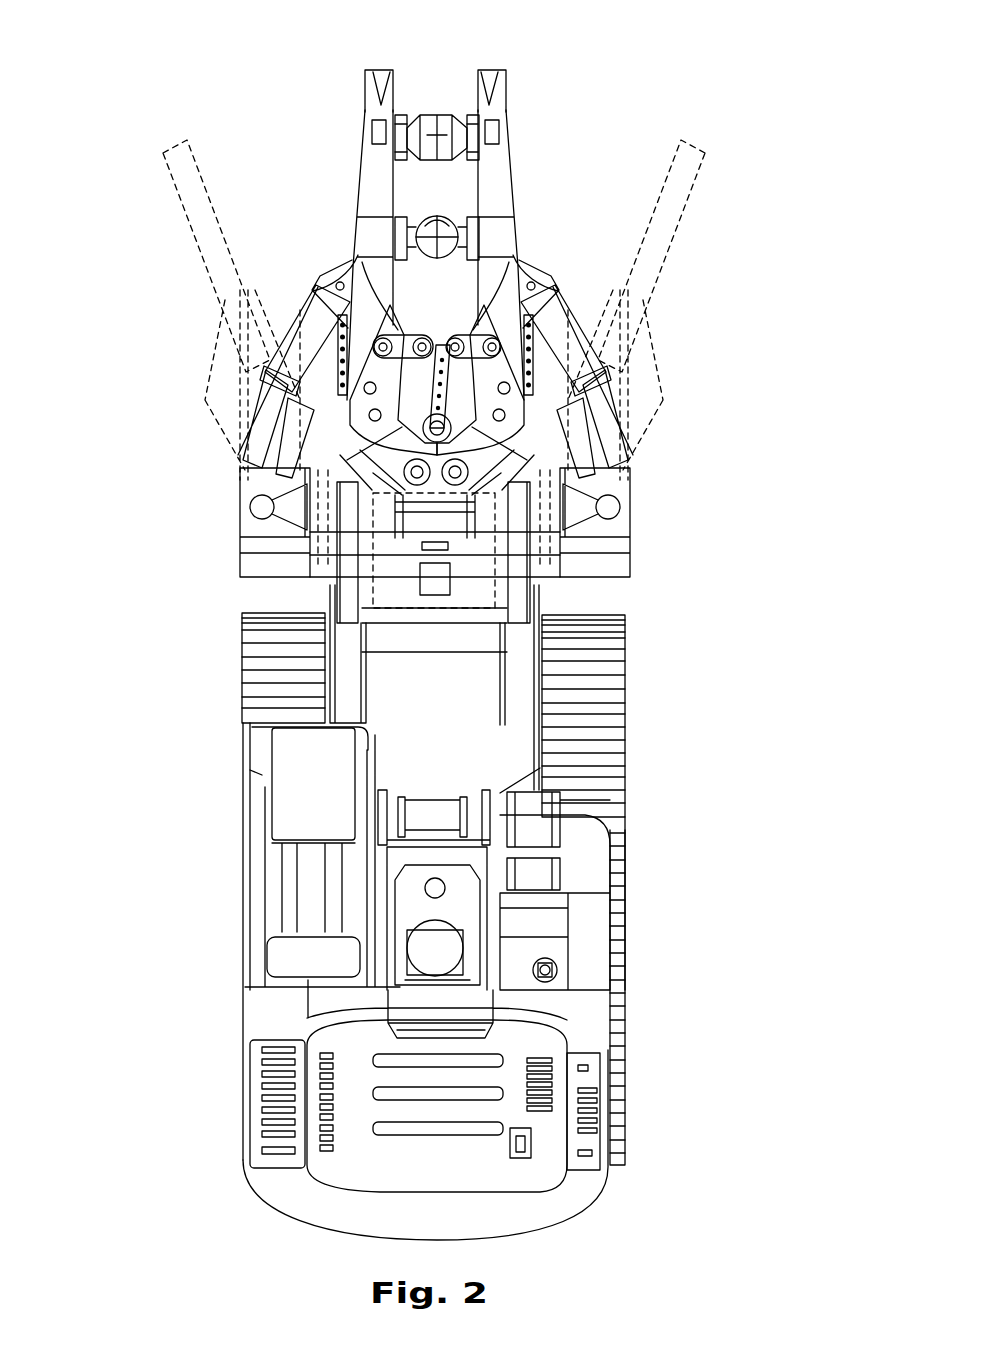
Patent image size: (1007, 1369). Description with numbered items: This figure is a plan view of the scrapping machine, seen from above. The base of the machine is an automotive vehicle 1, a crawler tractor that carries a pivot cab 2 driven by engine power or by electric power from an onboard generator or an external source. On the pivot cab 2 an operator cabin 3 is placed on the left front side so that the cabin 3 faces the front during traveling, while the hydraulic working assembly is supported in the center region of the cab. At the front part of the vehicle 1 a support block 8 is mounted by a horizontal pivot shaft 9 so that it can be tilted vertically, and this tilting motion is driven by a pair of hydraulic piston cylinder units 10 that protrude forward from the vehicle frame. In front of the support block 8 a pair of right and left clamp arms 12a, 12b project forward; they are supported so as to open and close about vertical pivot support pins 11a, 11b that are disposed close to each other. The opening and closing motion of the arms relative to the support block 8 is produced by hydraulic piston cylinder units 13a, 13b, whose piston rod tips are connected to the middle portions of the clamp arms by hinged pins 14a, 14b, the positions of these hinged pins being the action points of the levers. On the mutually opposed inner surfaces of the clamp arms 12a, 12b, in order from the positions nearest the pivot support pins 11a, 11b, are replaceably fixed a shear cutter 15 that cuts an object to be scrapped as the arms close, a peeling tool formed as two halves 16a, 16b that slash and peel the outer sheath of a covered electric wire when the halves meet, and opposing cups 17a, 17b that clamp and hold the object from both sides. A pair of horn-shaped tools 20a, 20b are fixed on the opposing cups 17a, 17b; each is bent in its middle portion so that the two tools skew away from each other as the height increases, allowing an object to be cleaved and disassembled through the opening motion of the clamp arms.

The automotive vehicle 1 is at (625, 820).
The pivot cab 2 is at (256, 1032).
The operator cabin 3 is at (302, 800).
The support block 8 is at (628, 565).
The horizontal pivot shaft 9 is at (336, 600).
The hydraulic piston cylinder units 10 is at (520, 600).
The vertical pivot support pin 11a is at (340, 460).
The vertical pivot support pin 11b is at (532, 462).
The clamp arm 12a is at (353, 263).
The clamp arm 12b is at (512, 282).
The hydraulic piston cylinder unit 13a is at (285, 428).
The hydraulic piston cylinder unit 13b is at (583, 440).
The hinged pin 14a is at (226, 284).
The hinged pin 14b is at (640, 300).
The shear cutter 15 is at (402, 333).
The peeling tool half 16a is at (440, 212).
The peeling tool half 16b is at (440, 240).
The opposing cup 17a is at (380, 98).
The opposing cup 17b is at (492, 100).
The horn-shaped tool 20a is at (400, 130).
The horn-shaped tool 20b is at (480, 125).